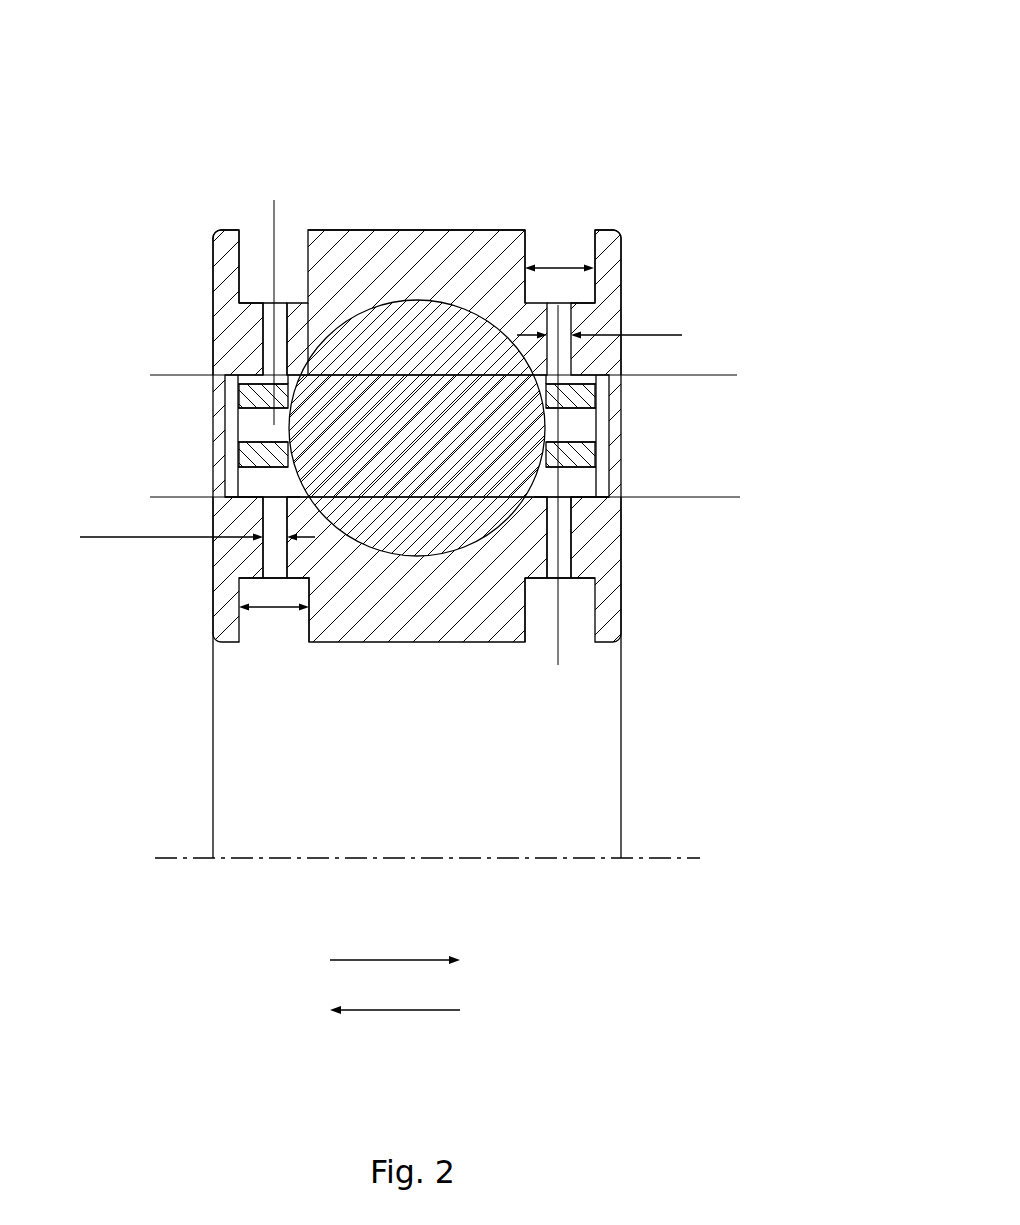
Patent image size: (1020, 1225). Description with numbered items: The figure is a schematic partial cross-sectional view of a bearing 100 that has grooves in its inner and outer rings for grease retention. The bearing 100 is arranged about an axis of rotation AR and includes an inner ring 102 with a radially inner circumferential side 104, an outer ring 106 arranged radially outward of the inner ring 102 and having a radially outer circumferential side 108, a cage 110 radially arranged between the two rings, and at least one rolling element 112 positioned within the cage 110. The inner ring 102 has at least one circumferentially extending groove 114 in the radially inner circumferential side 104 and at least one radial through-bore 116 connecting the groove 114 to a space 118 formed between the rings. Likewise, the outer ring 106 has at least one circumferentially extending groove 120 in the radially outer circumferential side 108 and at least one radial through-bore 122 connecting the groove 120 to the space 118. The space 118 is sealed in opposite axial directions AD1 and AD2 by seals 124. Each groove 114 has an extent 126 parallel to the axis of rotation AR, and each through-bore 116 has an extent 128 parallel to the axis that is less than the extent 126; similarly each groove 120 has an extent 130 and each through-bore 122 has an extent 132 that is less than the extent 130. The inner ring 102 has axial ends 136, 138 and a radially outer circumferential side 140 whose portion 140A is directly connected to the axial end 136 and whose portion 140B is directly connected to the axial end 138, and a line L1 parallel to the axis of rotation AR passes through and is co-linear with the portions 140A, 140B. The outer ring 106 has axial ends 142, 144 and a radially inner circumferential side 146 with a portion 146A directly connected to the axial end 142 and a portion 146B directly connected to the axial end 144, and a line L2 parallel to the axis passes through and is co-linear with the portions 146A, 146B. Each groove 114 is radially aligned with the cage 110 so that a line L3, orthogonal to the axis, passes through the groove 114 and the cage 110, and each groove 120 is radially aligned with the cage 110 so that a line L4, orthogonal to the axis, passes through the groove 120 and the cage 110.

The bearing 100 is at (725, 66).
The inner ring 102 is at (397, 667).
The radially inner circumferential side 104 is at (455, 647).
The outer ring 106 is at (365, 229).
The radially outer circumferential side 108 is at (455, 228).
The cage 110 is at (265, 312).
The rolling element 112 is at (485, 342).
The circumferentially extending groove 114 is at (257, 632).
The radial through-bore 116 is at (270, 565).
The space 118 is at (268, 483).
The circumferentially extending groove 120 is at (248, 243).
The radial through-bore 122 is at (212, 300).
The seals 124 is at (213, 437).
The extent 126 is at (272, 612).
The extent 128 is at (80, 537).
The extent 130 is at (553, 266).
The extent 132 is at (663, 334).
The axial end 136 is at (212, 557).
The axial end 138 is at (622, 558).
The radially outer circumferential side 140 is at (460, 552).
The portion 140A is at (243, 500).
The portion 140B is at (582, 500).
The axial end 142 is at (214, 316).
The axial end 144 is at (620, 316).
The radially inner circumferential side 146 is at (363, 308).
The portion 146A is at (250, 376).
The portion 146B is at (584, 376).
The line L1 is at (740, 497).
The line L2 is at (737, 374).
The line L3 is at (558, 615).
The line L4 is at (274, 215).
The axis of rotation AR is at (665, 858).
The axial direction AD1 is at (370, 958).
The axial direction AD2 is at (395, 1012).